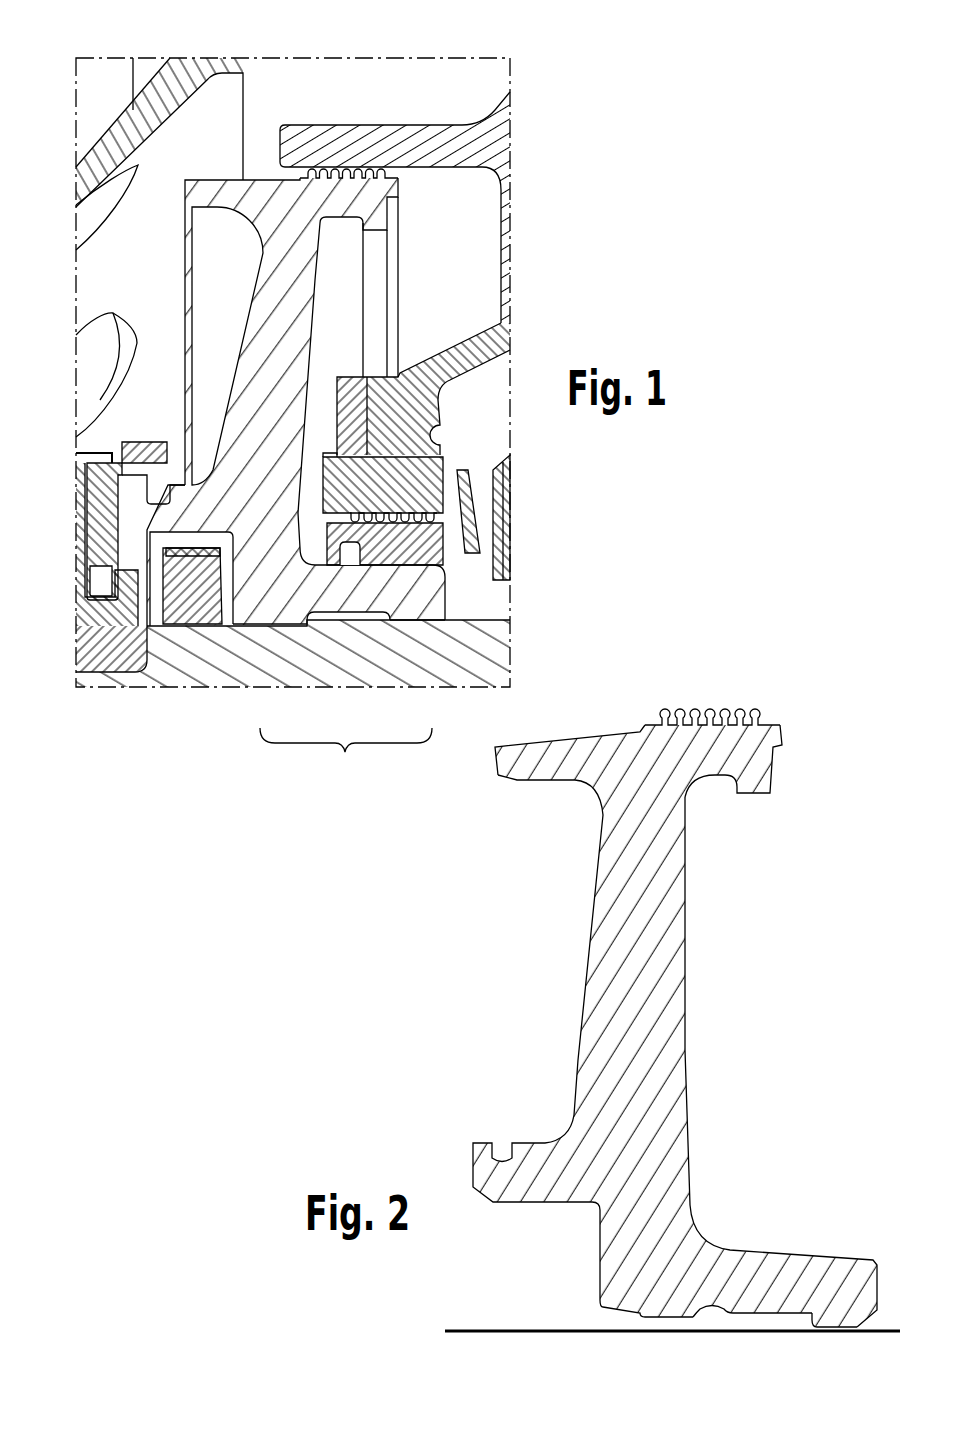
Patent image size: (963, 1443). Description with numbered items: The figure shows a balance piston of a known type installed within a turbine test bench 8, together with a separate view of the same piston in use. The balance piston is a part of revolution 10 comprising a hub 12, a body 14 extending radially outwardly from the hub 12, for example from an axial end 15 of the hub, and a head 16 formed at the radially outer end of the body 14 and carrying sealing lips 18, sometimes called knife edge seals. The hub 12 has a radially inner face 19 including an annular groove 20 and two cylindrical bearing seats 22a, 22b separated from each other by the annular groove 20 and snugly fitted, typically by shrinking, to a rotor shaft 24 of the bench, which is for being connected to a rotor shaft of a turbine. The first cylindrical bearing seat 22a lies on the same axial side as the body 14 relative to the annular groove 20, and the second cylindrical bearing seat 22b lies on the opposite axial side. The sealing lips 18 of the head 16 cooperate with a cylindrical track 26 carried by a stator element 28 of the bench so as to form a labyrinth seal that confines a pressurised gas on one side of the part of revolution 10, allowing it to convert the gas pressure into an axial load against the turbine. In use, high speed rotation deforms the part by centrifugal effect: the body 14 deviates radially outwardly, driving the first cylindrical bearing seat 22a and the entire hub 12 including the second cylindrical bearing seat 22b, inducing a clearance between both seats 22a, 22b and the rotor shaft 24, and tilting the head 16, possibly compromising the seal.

In FIG. 1, the turbine test bench 8 is at (105, 100).
In FIG. 1, the part of revolution 10 is at (291, 402).
In FIG. 2, the part of revolution 10 is at (660, 1018).
In FIG. 1, the hub 12 is at (392, 618).
In FIG. 2, the hub 12 is at (747, 1297).
In FIG. 1, the body 14 is at (277, 363).
In FIG. 2, the body 14 is at (615, 953).
In FIG. 1, the axial end 15 is at (227, 603).
In FIG. 2, the axial end 15 is at (596, 1276).
In FIG. 1, the head 16 is at (213, 200).
In FIG. 2, the head 16 is at (495, 762).
In FIG. 1, the sealing lips 18 is at (357, 168).
In FIG. 2, the sealing lips 18 is at (695, 712).
In FIG. 1, the radially inner face 19 is at (346, 755).
In FIG. 1, the annular groove 20 is at (363, 620).
In FIG. 2, the annular groove 20 is at (733, 1331).
In FIG. 1, the first cylindrical bearing seat 22a is at (283, 625).
In FIG. 2, the first cylindrical bearing seat 22a is at (640, 1331).
In FIG. 1, the second cylindrical bearing seat 22b is at (418, 620).
In FIG. 2, the second cylindrical bearing seat 22b is at (827, 1331).
In FIG. 1, the rotor shaft 24 is at (443, 657).
In FIG. 2, the rotor shaft 24 is at (507, 1328).
In FIG. 1, the cylindrical track 26 is at (392, 168).
In FIG. 1, the stator element 28 is at (455, 145).